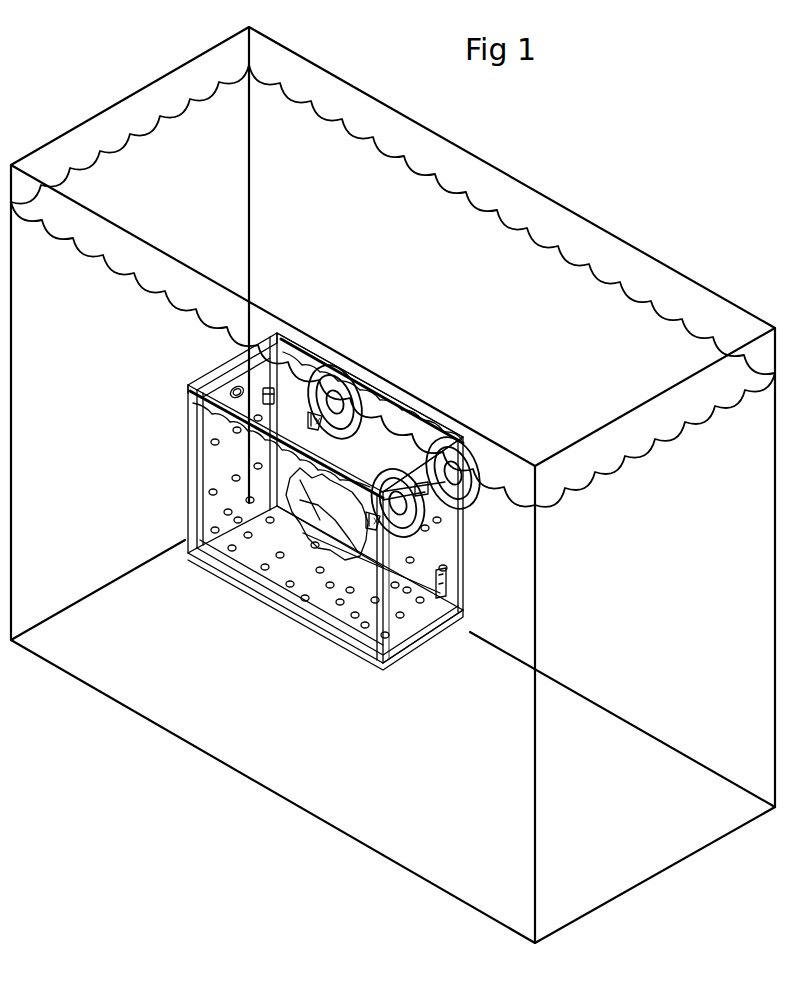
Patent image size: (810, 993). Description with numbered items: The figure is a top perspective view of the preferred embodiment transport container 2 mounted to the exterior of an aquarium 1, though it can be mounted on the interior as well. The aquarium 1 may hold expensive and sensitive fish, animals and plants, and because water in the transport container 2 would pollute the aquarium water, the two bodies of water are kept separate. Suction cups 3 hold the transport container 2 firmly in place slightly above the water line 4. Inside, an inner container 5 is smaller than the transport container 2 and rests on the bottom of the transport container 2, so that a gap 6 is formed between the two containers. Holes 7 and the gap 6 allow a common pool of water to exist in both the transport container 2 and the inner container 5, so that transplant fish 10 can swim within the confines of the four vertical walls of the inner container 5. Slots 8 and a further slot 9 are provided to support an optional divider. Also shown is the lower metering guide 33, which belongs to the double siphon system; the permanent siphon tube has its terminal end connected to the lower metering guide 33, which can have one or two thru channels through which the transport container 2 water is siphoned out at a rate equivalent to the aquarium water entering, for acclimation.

The aquarium 1 is at (703, 287).
The transport container 2 is at (383, 668).
The suction cups 3 is at (358, 388).
The water line 4 is at (593, 267).
The inner container 5 is at (202, 438).
The gap 6 is at (225, 373).
The holes 7 is at (213, 490).
The slots 8 is at (260, 448).
The slot 9 is at (347, 548).
The transplant fish 10 is at (337, 524).
The lower metering guide 33 is at (445, 582).